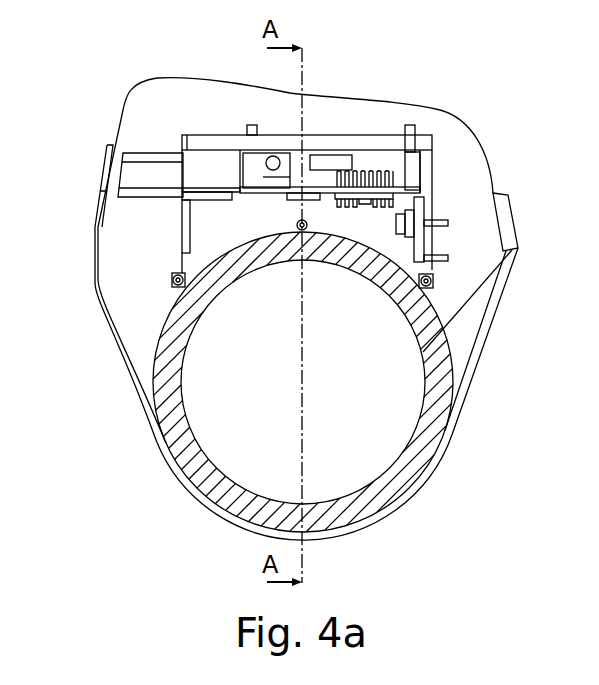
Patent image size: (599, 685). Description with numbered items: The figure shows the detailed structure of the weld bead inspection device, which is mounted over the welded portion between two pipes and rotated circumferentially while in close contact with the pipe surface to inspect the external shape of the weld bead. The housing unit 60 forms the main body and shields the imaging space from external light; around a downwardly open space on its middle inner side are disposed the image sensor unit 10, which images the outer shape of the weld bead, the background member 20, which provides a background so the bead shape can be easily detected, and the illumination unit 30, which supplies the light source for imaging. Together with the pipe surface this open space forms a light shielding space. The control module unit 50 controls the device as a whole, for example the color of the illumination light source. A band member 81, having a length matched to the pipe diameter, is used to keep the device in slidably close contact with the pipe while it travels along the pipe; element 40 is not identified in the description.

The image sensor unit 10 is at (407, 223).
The background member 20 is at (183, 232).
The illumination unit 30 is at (305, 197).
The annular ring 40 is at (207, 258).
The control module unit 50 is at (340, 158).
The housing unit 60 is at (163, 117).
The band member 81 is at (490, 330).